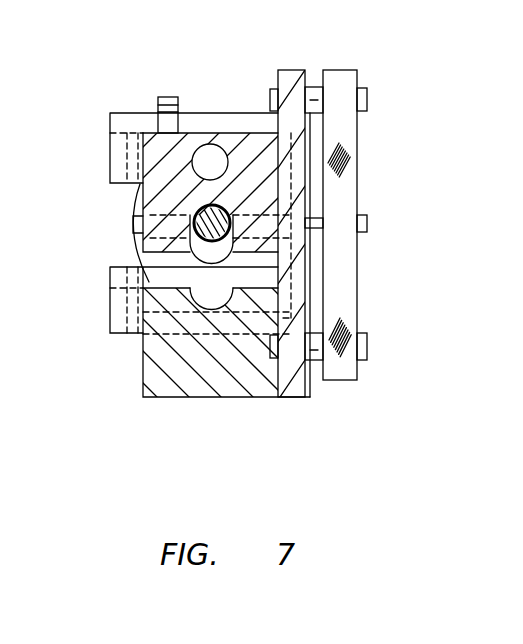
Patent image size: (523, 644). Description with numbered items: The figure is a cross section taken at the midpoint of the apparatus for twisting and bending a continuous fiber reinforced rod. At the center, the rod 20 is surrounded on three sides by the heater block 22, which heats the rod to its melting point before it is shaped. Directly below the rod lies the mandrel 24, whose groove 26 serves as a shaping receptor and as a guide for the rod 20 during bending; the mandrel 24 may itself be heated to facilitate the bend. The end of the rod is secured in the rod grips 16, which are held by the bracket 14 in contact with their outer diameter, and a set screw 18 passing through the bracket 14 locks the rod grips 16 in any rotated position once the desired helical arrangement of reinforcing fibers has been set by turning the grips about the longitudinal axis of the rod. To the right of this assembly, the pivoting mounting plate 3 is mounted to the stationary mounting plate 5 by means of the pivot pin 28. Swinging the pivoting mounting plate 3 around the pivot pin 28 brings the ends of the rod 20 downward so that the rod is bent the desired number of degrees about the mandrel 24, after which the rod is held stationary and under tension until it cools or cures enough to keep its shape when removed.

The pivoting mounting plate 3 is at (357, 303).
The stationary mounting plate 5 is at (295, 70).
The bracket 14 is at (109, 149).
The rod grip 16 is at (135, 203).
The set screw 18 is at (165, 97).
The rod 20 is at (141, 220).
The heater block 22 is at (245, 132).
The mandrel 24 is at (165, 397).
The groove 26 is at (214, 313).
The pivot pin 28 is at (318, 205).